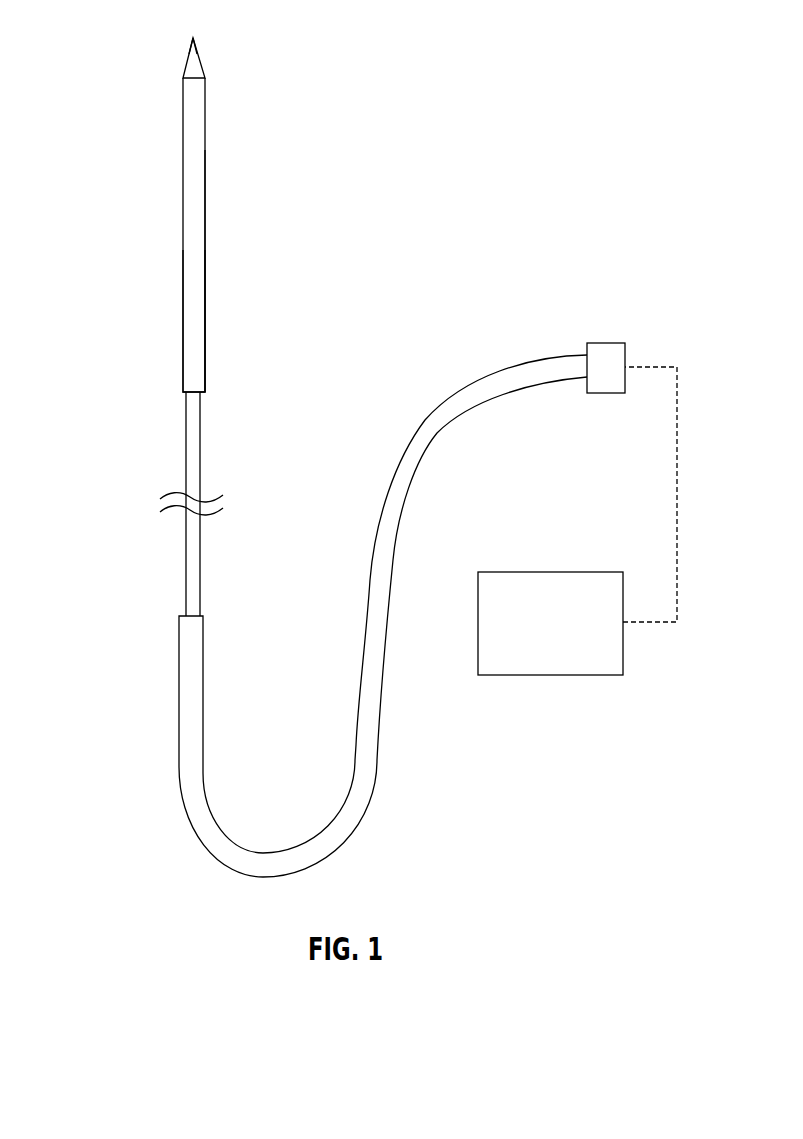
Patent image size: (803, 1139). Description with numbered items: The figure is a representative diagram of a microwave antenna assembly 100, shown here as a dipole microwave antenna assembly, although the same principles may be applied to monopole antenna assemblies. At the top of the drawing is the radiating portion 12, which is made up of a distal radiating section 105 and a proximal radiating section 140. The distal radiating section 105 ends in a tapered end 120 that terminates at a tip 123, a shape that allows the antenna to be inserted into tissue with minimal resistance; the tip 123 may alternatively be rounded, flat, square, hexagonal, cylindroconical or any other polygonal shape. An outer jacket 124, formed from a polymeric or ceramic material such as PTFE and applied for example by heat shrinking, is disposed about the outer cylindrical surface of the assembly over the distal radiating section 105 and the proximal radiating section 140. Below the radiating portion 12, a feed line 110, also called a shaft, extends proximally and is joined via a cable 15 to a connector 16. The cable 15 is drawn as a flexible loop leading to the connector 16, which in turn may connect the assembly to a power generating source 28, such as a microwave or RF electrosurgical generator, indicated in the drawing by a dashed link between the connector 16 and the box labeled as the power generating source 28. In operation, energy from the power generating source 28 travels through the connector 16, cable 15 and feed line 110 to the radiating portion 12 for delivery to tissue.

The microwave antenna assembly 100 is at (499, 129).
The radiating portion 12 is at (107, 33).
The distal radiating section 105 is at (221, 129).
The tapered end 120 is at (191, 63).
The tip 123 is at (195, 36).
The outer jacket 124 is at (205, 233).
The proximal radiating section 140 is at (221, 319).
The feed line 110 is at (201, 452).
The cable 15 is at (179, 698).
The connector 16 is at (607, 342).
The power generating source 28 is at (560, 572).